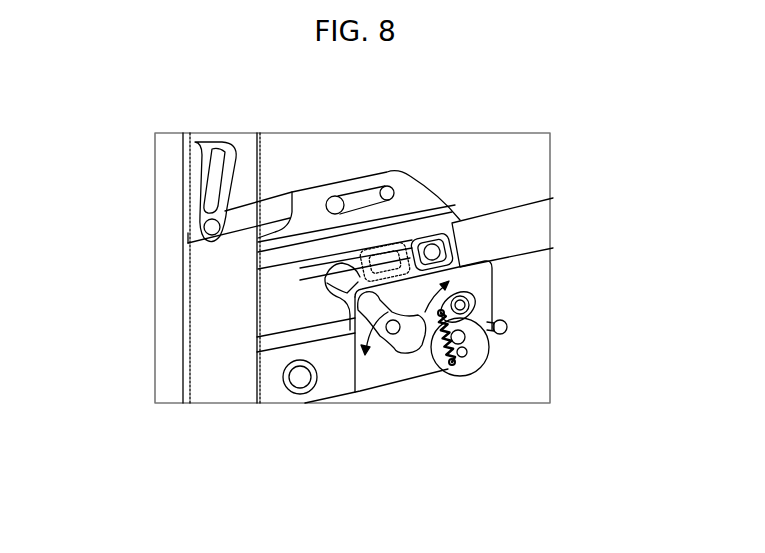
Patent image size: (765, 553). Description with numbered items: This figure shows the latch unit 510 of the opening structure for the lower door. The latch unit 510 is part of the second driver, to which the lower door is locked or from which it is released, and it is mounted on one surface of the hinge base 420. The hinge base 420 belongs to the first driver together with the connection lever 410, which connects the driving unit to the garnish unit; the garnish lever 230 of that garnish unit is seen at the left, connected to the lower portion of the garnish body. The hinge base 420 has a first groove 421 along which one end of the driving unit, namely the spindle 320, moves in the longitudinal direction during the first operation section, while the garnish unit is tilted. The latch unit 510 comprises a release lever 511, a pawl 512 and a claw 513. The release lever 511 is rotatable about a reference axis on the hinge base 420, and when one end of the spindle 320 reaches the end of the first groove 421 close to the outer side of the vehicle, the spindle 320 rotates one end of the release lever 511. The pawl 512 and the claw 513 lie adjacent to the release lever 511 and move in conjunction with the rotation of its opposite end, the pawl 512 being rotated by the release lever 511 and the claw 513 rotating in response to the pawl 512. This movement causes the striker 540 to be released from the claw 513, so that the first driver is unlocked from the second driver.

The garnish lever 230 is at (200, 194).
The spindle 320 is at (522, 218).
The connection lever 410 is at (274, 208).
The hinge base 420 is at (282, 313).
The first groove 421 is at (351, 306).
The latch unit 510 is at (453, 394).
The release lever 511 is at (400, 355).
The pawl 512 is at (485, 360).
The claw 513 is at (473, 362).
The striker 540 is at (508, 328).